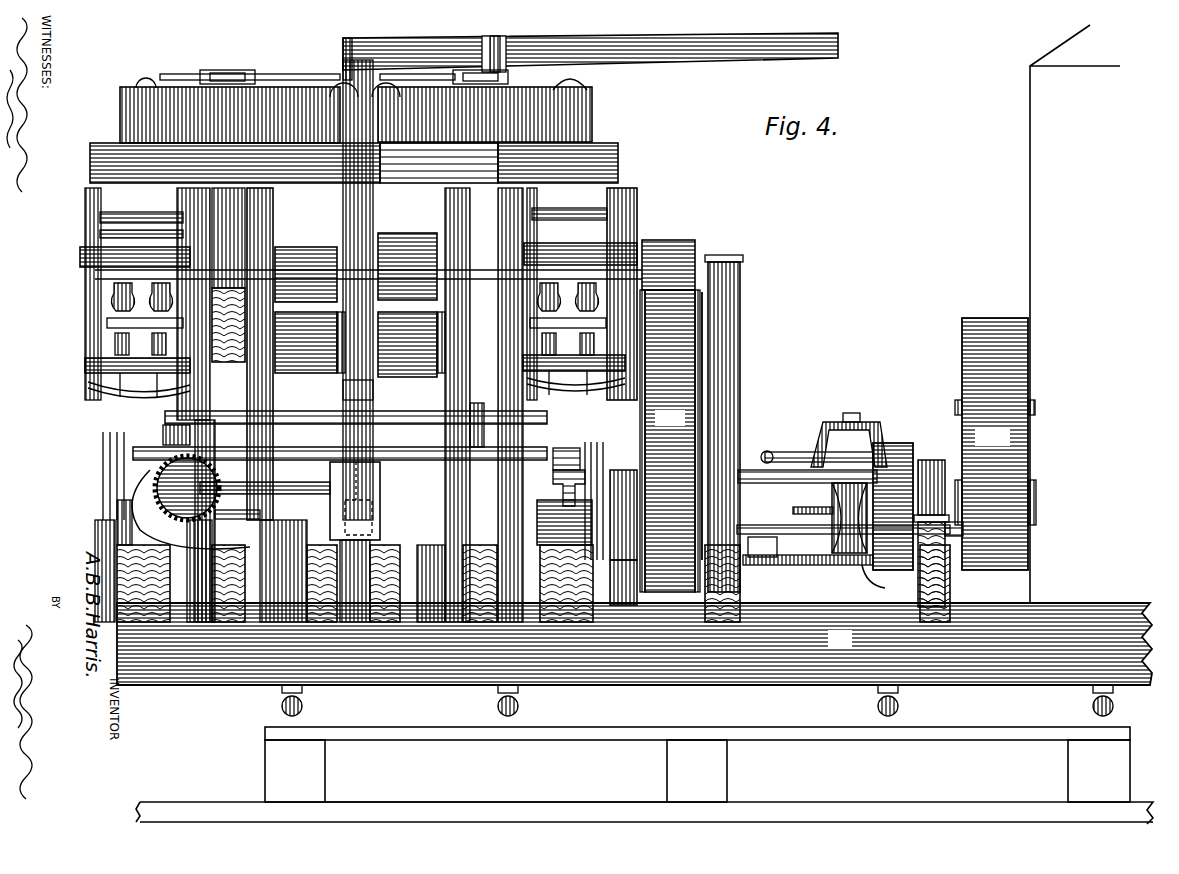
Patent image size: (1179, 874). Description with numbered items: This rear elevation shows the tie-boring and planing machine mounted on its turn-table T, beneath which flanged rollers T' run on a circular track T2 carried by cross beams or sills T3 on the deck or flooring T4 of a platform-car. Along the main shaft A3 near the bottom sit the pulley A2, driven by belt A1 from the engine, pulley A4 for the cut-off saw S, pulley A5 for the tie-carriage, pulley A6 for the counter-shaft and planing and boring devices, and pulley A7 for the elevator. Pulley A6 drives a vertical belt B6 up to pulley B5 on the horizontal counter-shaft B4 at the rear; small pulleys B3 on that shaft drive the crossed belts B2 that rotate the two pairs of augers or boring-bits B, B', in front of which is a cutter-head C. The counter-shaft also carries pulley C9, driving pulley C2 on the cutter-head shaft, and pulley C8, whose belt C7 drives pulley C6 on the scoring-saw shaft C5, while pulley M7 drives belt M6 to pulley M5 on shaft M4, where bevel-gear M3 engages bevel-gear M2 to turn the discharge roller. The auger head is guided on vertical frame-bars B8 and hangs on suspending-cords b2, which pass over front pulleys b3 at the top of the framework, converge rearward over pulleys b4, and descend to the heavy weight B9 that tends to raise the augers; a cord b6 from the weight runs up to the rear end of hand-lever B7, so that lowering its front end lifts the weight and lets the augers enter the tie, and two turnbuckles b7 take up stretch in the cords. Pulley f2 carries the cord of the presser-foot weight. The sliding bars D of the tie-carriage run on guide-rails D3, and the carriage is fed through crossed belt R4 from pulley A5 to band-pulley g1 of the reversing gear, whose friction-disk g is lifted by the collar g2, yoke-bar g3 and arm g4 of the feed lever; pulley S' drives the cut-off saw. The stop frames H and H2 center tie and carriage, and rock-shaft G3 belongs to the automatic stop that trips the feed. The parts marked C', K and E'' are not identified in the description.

The hand-lever B7 is at (747, 58).
The rear pulleys b4 is at (390, 74).
The turnbuckles b7 is at (228, 72).
The front pulleys b3 is at (146, 88).
The suspending-cords b2 is at (343, 165).
The pulley f2 is at (392, 178).
The pulley M7 is at (273, 230).
The vertical frame-bars B8 is at (625, 205).
The pulley B5 is at (712, 258).
The crossed belts B2 is at (82, 253).
The counter-shaft B4 is at (185, 268).
The small pulleys B3 is at (118, 300).
The augers or boring-bits B is at (342, 367).
The augers or boring-bits B' is at (353, 394).
The cutter-head C is at (357, 398).
The pulley C9 is at (306, 274).
The gear C' is at (306, 354).
The pulley C2 is at (338, 370).
The pulley C8 is at (385, 240).
The belt C7 is at (440, 348).
The pulley C6 is at (438, 372).
The axial shaft C5 is at (228, 362).
The cord b6 is at (343, 392).
The vertical belt B6 is at (670, 441).
The cut-off saw S is at (728, 426).
The U-shaped frame H is at (415, 424).
The rock-shaft G3 is at (474, 425).
The belt M6 is at (270, 447).
The sliding bars D is at (163, 436).
The guide-rails D3 is at (560, 500).
The bevel-gear M2 is at (160, 498).
The rods K is at (102, 445).
The pulley M5 is at (265, 488).
The shaft M4 is at (262, 515).
The bevel-gear M3 is at (209, 511).
The U-shaped frame H2 is at (381, 470).
The heavy weight B9 is at (354, 498).
The gear E'' is at (611, 501).
The pulley A7 is at (621, 582).
The belt A1 is at (995, 444).
The pulley A2 is at (1034, 520).
The pulley S' is at (931, 517).
The collar g2 is at (870, 430).
The yoke-bar g3 is at (795, 452).
The arm g4 is at (764, 453).
The friction-disk g is at (812, 508).
The main shaft A3 is at (802, 535).
The band-pulley g1 is at (762, 547).
The pulley A5 is at (840, 555).
The pulley A4 is at (893, 506).
The pulley A6 is at (760, 565).
The crossed belt R4 is at (879, 584).
The turn-table T is at (634, 644).
The flanged rollers T' is at (697, 705).
The circular track T2 is at (740, 727).
The cross beams or sills T3 is at (697, 771).
The deck or flooring T4 is at (550, 810).